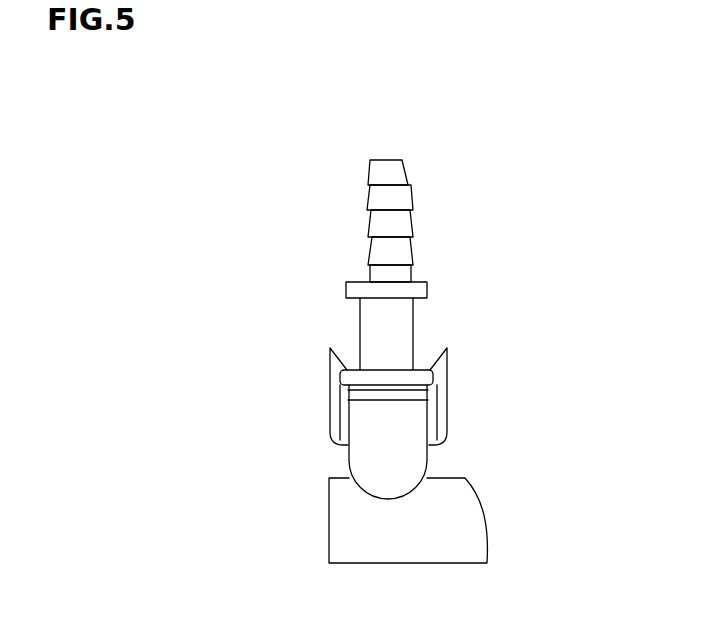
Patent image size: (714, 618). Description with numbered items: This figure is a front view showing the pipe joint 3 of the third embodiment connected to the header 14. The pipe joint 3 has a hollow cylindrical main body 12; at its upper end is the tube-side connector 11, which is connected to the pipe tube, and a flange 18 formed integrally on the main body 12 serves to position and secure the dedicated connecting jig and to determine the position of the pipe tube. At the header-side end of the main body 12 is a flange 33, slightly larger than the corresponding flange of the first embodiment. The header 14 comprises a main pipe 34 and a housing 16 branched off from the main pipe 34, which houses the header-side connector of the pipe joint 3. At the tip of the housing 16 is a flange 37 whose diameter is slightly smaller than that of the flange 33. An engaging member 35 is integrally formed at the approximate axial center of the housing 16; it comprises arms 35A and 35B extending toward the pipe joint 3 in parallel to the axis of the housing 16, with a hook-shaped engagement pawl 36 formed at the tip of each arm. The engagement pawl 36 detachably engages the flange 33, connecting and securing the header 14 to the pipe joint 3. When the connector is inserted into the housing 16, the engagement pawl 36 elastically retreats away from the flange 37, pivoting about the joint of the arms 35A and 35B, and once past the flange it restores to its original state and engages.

The pipe joint 3 is at (615, 257).
The tube-side connector 11 is at (411, 195).
The main body 12 is at (414, 325).
The header 14 is at (454, 534).
The housing 16 is at (416, 458).
The flange 18 is at (345, 290).
The flange 33 is at (436, 378).
The main pipe 34 is at (460, 557).
The engaging member 35 is at (424, 418).
The arm 35A is at (447, 413).
The arm 35B is at (330, 432).
The engagement pawl 36 is at (328, 365).
The flange 37 is at (432, 390).